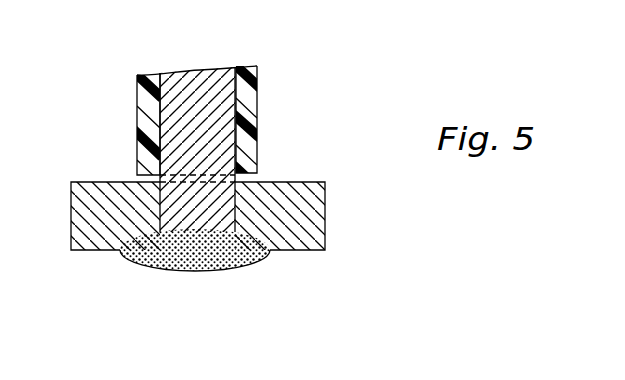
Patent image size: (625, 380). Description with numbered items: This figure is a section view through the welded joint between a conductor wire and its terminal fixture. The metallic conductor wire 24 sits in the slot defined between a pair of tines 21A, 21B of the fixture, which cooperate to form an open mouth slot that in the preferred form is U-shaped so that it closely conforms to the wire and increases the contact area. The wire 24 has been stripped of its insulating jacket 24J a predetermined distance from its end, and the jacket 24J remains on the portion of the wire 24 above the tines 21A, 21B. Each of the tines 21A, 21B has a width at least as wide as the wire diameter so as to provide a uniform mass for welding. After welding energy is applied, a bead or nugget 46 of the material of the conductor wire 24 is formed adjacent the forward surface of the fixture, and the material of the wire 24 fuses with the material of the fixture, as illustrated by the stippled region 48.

The metallic conductor wire 24 is at (194, 72).
The insulating jacket 24J is at (229, 126).
The tine 21A is at (97, 182).
The tine 21B is at (288, 182).
The bead or nugget 46 is at (186, 294).
The stippled region 48 is at (208, 270).